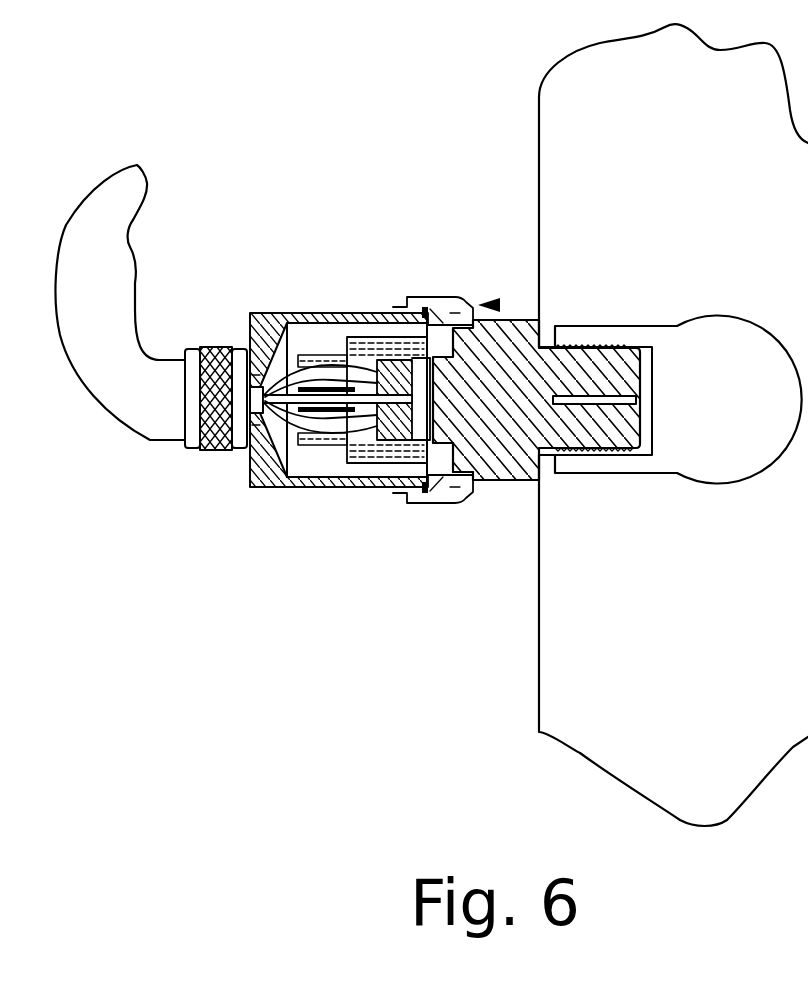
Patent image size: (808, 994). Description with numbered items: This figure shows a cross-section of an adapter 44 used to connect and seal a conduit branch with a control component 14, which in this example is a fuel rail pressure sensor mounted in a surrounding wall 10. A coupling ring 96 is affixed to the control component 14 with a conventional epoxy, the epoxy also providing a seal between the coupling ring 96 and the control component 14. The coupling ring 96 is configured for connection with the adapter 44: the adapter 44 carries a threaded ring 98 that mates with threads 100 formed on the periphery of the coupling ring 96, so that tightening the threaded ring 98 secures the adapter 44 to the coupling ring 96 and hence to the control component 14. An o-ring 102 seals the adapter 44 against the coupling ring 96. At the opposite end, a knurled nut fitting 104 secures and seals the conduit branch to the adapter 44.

The housing wall 10 is at (539, 687).
The control component 14 is at (502, 483).
The adapter 44 is at (320, 484).
The coupling ring 96 is at (471, 481).
The threaded ring 98 is at (423, 297).
The threads 100 is at (500, 305).
The o-ring 102 is at (423, 490).
The nut fitting 104 is at (213, 347).